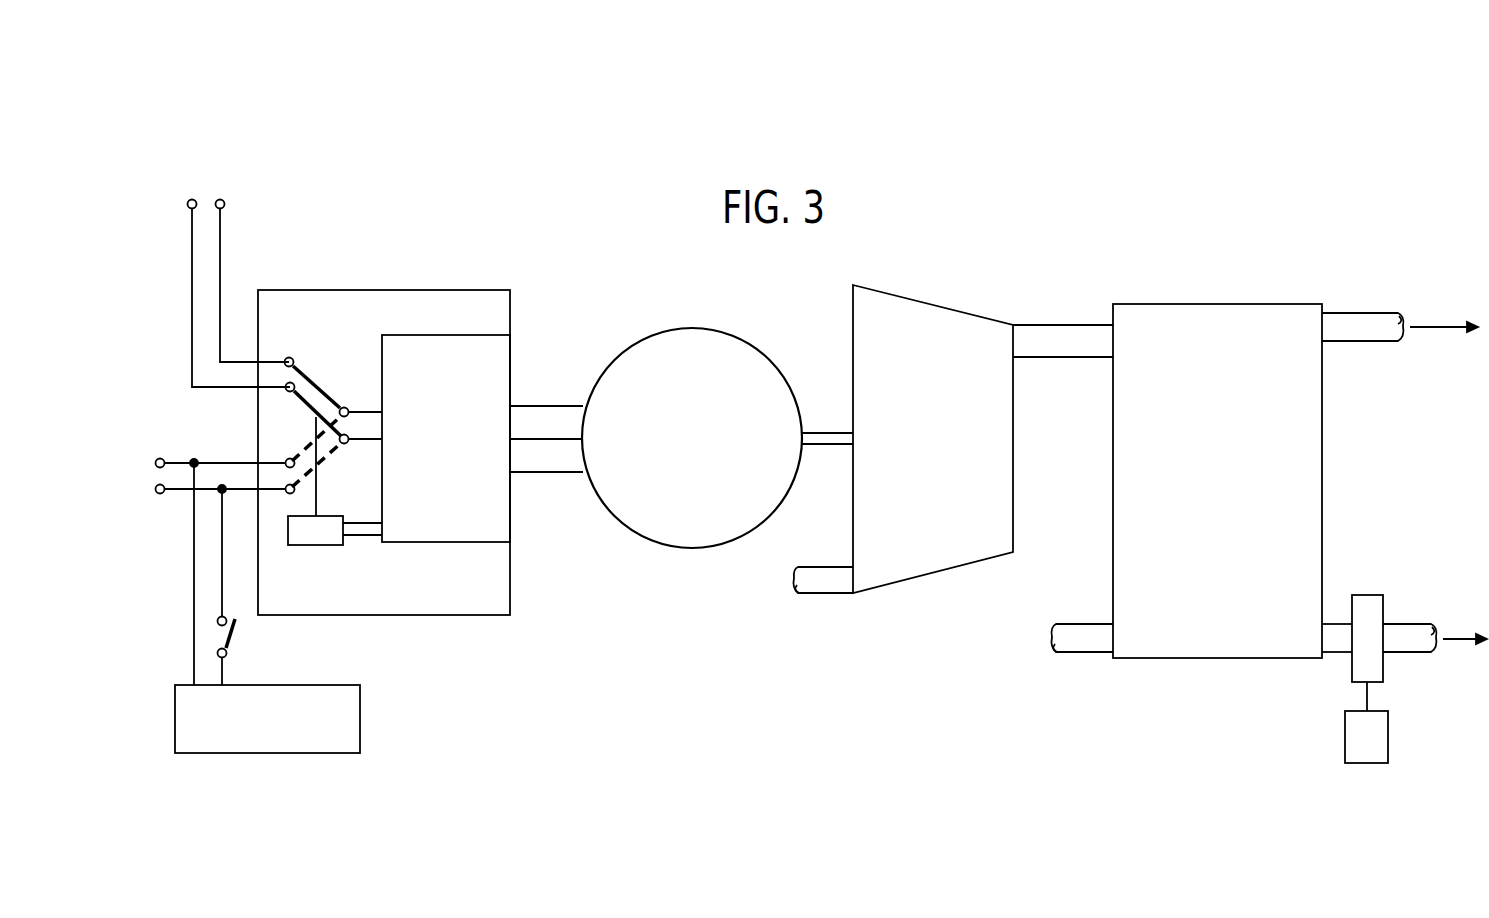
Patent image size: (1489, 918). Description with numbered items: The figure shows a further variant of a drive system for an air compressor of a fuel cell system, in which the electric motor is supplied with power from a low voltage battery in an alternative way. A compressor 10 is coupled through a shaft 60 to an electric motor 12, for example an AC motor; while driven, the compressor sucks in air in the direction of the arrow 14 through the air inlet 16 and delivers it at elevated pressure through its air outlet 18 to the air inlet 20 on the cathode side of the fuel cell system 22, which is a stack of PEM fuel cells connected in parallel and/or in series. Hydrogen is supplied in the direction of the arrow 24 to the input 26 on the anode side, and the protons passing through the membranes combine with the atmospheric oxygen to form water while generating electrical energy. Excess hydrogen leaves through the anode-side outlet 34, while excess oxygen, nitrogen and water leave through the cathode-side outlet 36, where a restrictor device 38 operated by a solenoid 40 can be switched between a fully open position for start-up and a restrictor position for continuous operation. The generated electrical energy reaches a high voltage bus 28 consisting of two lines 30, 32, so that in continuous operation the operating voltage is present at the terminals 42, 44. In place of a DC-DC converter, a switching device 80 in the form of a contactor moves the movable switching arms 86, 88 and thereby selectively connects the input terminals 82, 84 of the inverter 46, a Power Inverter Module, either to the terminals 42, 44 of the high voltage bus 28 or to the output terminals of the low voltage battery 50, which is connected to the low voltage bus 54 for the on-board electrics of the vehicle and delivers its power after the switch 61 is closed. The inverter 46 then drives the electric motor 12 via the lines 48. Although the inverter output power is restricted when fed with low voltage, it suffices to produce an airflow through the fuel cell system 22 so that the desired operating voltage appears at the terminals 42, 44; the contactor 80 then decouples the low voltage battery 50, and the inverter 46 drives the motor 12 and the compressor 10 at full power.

The compressor 10 is at (921, 557).
The electric motor 12 is at (645, 506).
The arrow 14 is at (783, 580).
The air inlet 16 is at (826, 580).
The air outlet 18 is at (1021, 338).
The air inlet 20 is at (1105, 335).
The fuel cell system 22 is at (1183, 640).
The arrow 24 is at (1042, 637).
The input 26 is at (1094, 642).
The high voltage bus 28 is at (231, 243).
The line 30 is at (191, 266).
The line 32 is at (221, 281).
The outlet 34 is at (1366, 328).
The outlet 36 is at (1413, 642).
The restrictor device 38 is at (1358, 666).
The solenoid 40 is at (1374, 755).
The terminal 42 is at (187, 201).
The terminal 44 is at (225, 201).
The inverter 46 is at (455, 358).
The lines 48 is at (548, 470).
The low voltage battery 50 is at (282, 732).
The low voltage bus 54 is at (182, 494).
The shaft 60 is at (822, 441).
The switch 61 is at (236, 633).
The switching device 80 is at (319, 532).
The input terminal 82 is at (342, 406).
The input terminal 84 is at (345, 444).
The movable switching arm 86 is at (300, 403).
The movable switching arm 88 is at (293, 360).